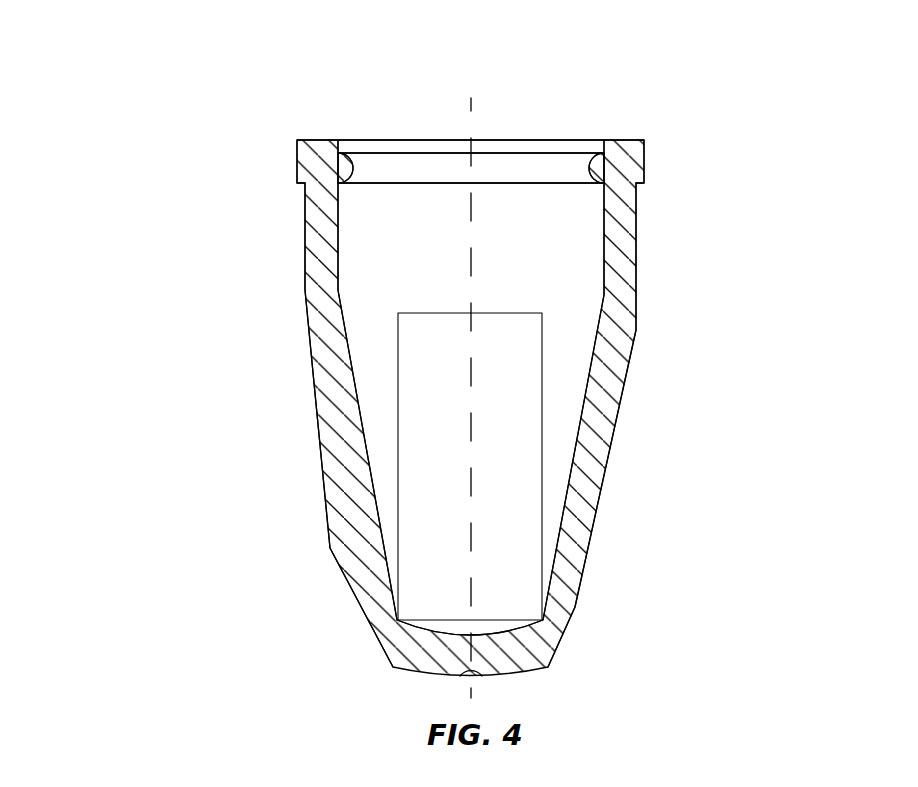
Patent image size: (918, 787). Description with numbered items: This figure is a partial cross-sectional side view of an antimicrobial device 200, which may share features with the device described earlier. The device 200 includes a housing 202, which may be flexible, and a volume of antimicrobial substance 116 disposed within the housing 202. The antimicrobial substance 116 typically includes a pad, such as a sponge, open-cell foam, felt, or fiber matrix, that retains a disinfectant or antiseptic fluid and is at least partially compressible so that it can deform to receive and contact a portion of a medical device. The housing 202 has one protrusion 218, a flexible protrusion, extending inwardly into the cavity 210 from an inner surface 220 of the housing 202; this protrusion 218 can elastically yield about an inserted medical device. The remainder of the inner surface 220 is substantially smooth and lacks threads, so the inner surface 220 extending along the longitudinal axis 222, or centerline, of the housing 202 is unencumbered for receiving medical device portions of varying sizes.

The antimicrobial device 200 is at (226, 106).
The housing 202 is at (318, 252).
The protrusion 218 is at (578, 168).
The inner surface 220 is at (372, 482).
The cavity 210 is at (390, 541).
The volume of antimicrobial substance 116 is at (417, 380).
The longitudinal axis 222 is at (471, 103).